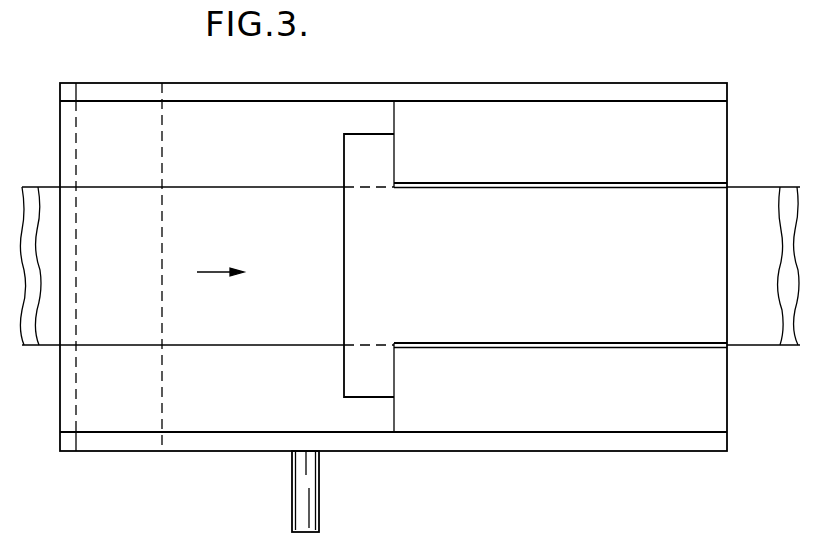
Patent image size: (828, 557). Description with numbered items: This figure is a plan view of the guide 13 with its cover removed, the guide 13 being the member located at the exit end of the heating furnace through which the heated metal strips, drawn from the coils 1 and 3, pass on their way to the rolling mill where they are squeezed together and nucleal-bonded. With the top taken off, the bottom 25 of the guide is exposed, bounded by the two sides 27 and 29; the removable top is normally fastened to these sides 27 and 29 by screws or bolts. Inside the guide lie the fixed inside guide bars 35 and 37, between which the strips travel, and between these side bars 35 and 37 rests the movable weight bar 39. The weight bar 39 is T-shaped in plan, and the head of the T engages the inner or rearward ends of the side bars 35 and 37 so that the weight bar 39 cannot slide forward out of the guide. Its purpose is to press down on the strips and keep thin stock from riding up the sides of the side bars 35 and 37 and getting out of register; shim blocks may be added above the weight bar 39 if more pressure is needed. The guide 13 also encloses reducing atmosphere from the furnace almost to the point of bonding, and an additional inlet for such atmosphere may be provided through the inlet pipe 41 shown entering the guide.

The coil of metal 1 is at (51, 344).
The coil of metal 3 is at (30, 346).
The guide member 13 is at (397, 454).
The bottom 25 is at (272, 122).
The side 27 is at (256, 448).
The side 29 is at (368, 84).
The fixed inside guide bar 35 is at (526, 397).
The fixed inside guide bar 37 is at (523, 150).
The movable weight bar 39 is at (449, 269).
The inlet pipe 41 is at (300, 507).